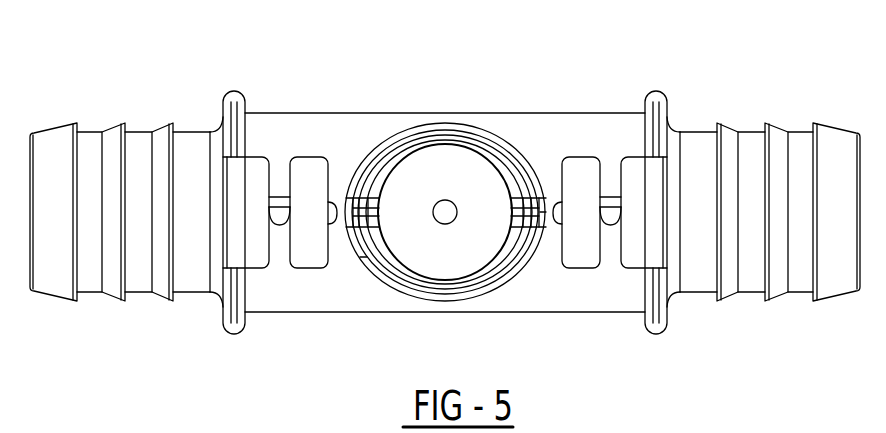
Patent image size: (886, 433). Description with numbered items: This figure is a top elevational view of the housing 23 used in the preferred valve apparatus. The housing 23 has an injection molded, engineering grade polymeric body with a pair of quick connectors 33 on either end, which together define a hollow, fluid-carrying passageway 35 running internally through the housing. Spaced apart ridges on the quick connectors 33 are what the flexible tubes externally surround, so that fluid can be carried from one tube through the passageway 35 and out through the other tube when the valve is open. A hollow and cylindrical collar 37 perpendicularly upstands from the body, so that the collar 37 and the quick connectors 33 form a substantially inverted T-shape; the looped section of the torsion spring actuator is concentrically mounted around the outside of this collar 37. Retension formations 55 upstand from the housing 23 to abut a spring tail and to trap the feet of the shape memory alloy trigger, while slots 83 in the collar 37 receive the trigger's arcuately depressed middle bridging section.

The housing 23 is at (595, 129).
The quick connectors 33 is at (123, 134).
The passageway 35 is at (407, 233).
The collar 37 is at (441, 123).
The retension formation 55 is at (576, 243).
The slots 83 is at (375, 200).